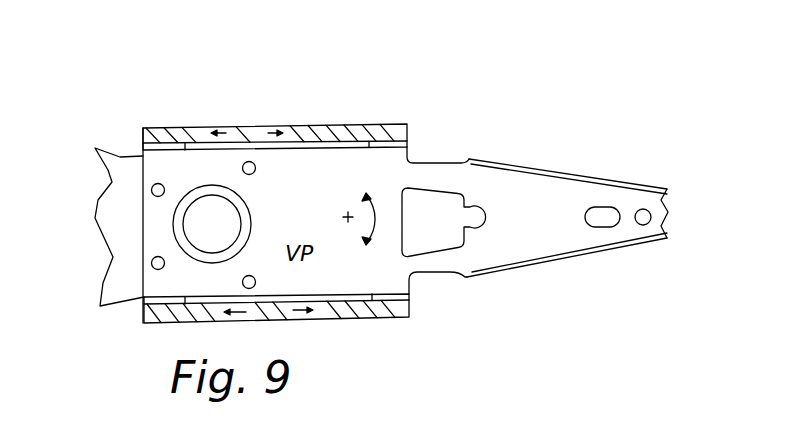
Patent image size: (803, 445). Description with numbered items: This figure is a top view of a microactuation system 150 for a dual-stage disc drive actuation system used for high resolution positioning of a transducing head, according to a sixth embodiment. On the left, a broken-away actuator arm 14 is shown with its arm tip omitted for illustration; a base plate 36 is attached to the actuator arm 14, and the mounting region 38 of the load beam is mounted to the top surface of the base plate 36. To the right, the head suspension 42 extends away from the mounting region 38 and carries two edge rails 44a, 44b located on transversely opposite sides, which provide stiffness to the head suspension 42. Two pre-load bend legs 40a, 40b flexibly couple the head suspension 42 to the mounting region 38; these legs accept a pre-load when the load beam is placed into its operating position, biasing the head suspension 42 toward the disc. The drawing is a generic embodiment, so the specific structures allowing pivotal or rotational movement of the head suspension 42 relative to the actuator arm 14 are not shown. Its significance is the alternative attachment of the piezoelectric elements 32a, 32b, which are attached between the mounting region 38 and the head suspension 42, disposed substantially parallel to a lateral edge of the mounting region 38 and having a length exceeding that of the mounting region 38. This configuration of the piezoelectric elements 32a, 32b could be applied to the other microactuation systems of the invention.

The actuator arm 14 is at (121, 156).
The base plate 36 is at (183, 233).
The mounting region 38 is at (158, 165).
The microactuation system 150 is at (271, 102).
The piezoelectric element 32a is at (323, 131).
The piezoelectric element 32b is at (380, 311).
The pre-load bend leg 40a is at (415, 173).
The pre-load bend leg 40b is at (443, 255).
The edge rail 44a is at (490, 163).
The edge rail 44b is at (548, 260).
The head suspension 42 is at (542, 184).